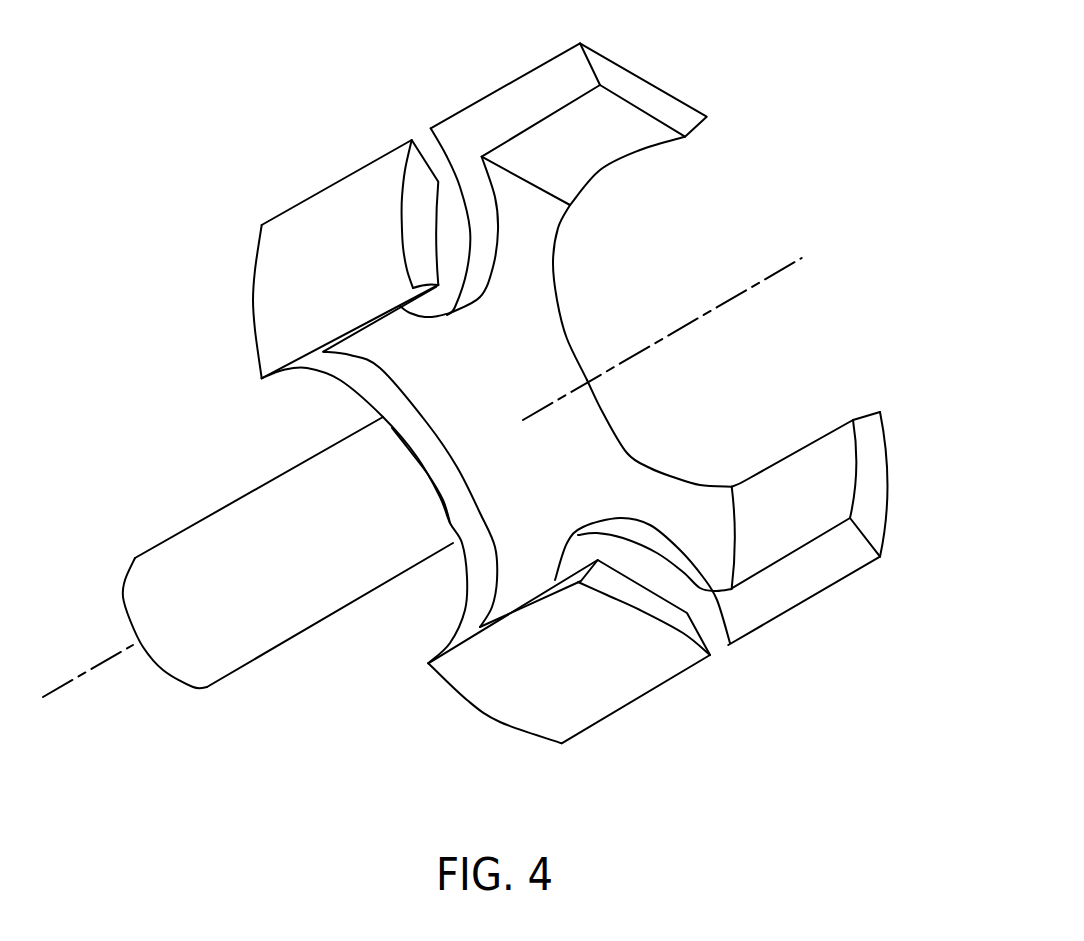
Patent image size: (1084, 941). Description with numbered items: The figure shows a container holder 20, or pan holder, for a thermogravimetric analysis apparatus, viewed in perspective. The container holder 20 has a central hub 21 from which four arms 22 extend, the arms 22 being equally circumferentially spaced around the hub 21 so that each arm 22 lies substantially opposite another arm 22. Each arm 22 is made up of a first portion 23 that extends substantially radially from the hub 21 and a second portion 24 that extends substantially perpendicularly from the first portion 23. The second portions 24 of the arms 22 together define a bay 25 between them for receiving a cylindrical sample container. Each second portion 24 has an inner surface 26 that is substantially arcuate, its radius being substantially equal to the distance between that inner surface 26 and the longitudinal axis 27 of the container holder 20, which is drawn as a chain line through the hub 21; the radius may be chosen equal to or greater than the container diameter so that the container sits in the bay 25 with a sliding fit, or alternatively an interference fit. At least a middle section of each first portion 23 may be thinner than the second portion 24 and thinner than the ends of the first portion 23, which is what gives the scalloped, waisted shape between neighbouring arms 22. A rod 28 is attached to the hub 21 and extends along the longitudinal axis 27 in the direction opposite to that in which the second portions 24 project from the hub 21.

The container holder 20 is at (798, 110).
The central hub 21 is at (520, 437).
The arm 22 is at (633, 208).
The first portion 23 is at (547, 263).
The second portion 24 is at (613, 67).
The bay 25 is at (847, 383).
The inner surface 26 is at (640, 148).
The longitudinal axis 27 is at (767, 280).
The rod 28 is at (197, 543).